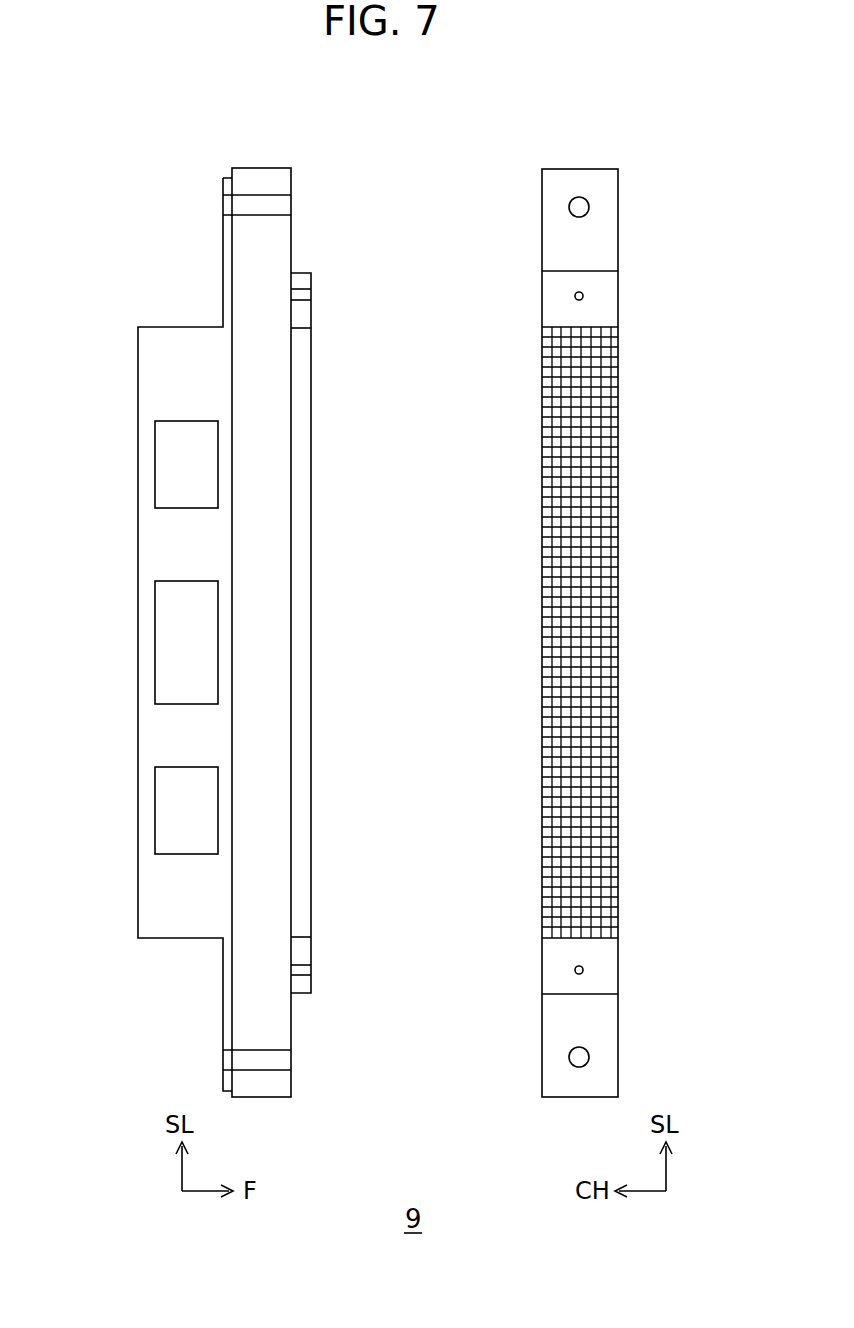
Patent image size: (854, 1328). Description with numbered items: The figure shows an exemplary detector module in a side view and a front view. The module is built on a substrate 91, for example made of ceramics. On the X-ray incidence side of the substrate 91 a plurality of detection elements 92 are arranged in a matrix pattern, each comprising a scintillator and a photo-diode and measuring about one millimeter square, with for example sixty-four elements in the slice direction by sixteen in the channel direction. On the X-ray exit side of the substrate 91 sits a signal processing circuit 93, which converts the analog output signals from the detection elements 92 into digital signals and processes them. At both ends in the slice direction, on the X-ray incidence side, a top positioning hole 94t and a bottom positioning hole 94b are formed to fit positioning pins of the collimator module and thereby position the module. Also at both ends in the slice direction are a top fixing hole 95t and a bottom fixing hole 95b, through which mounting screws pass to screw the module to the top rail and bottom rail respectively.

The substrate 91 is at (284, 233).
The detection elements 92 is at (301, 531).
The signal processing circuit 93 is at (152, 530).
The top positioning hole 94t is at (304, 295).
The bottom positioning hole 94b is at (304, 971).
The top fixing hole 95t is at (283, 205).
The bottom fixing hole 95b is at (283, 1060).